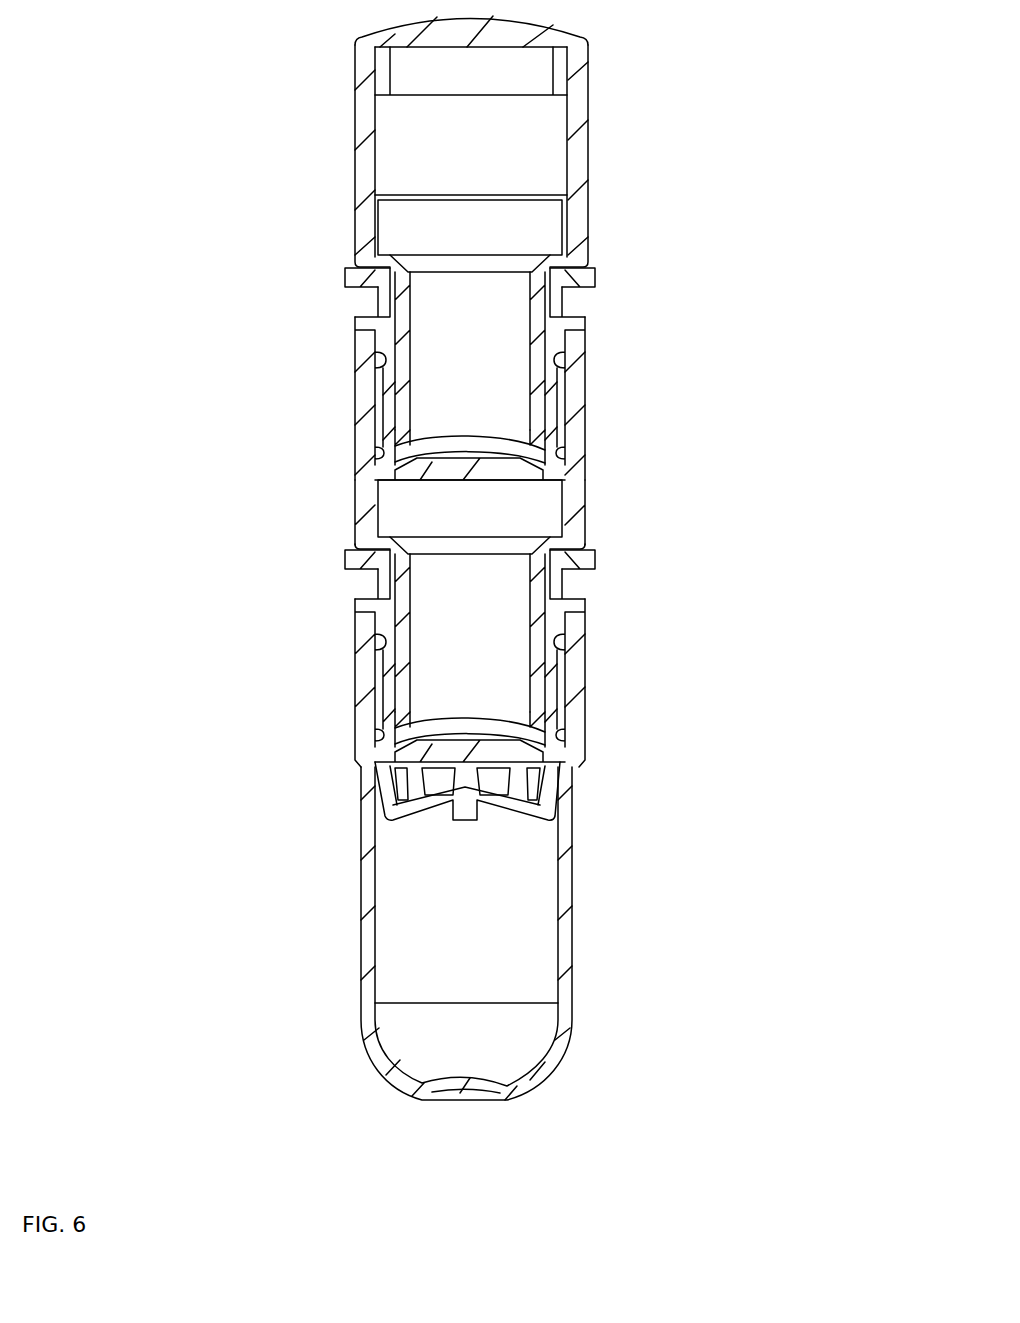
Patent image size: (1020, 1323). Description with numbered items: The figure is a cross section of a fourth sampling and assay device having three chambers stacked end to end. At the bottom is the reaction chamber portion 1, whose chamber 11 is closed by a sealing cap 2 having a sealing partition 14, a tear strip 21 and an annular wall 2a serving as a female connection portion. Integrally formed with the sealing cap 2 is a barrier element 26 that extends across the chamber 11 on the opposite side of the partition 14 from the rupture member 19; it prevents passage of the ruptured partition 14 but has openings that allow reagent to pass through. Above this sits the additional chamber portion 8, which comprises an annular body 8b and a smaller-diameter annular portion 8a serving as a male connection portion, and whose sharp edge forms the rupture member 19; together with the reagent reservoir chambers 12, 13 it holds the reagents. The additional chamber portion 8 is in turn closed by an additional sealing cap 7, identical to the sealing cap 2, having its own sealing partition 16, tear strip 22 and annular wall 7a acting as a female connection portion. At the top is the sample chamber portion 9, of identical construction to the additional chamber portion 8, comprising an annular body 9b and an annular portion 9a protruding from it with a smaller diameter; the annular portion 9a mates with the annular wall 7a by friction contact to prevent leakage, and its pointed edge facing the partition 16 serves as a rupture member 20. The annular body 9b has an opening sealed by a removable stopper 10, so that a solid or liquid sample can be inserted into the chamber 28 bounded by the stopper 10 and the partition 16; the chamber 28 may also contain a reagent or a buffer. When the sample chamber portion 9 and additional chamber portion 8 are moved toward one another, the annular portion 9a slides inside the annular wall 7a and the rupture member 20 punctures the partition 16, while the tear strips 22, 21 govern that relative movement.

The reaction chamber portion 1 is at (567, 987).
The sealing cap 2 is at (543, 682).
The annular wall of sealing cap 2a is at (545, 712).
The sealing cap 7 is at (543, 396).
The annular wall of sealing cap 7a is at (542, 437).
The additional chamber portion 8 is at (585, 465).
The annular portion of additional chamber portion 8a is at (545, 603).
The annular body of additional chamber portion 8b is at (578, 506).
The sample chamber portion 9 is at (586, 144).
The annular portion of sample chamber portion 9a is at (553, 313).
The annular body of sample chamber portion 9b is at (575, 217).
The stopper 10 is at (548, 34).
The chamber of reaction chamber portion 11 is at (525, 918).
The chamber of additional chamber portion 12 is at (472, 642).
The chamber of reagent chamber portion 13 is at (472, 354).
The sealing partition of sealing cap 14 is at (428, 750).
The sealing partition of sealing cap 16 is at (460, 474).
The rupture member of additional chamber portion 19 is at (458, 722).
The rupture member of sample chamber portion 20 is at (462, 444).
The tear strip of sealing cap 21 is at (585, 559).
The tear strip of sealing cap 22 is at (597, 286).
The barrier element 26 is at (510, 807).
The chamber of sample chamber portion 28 is at (540, 119).